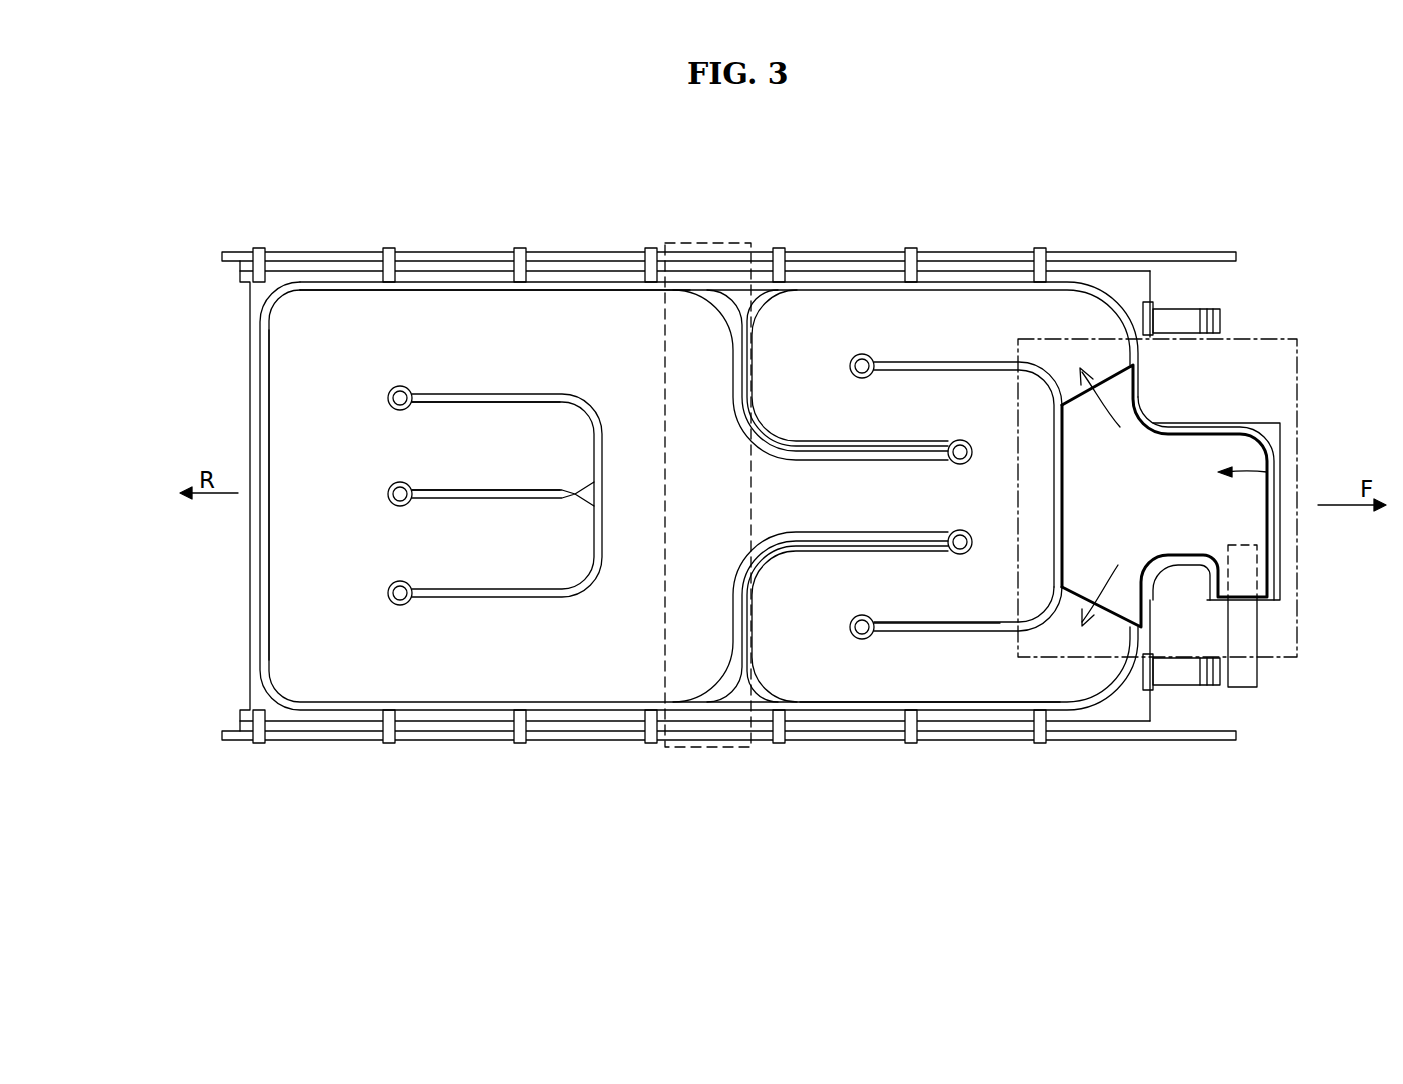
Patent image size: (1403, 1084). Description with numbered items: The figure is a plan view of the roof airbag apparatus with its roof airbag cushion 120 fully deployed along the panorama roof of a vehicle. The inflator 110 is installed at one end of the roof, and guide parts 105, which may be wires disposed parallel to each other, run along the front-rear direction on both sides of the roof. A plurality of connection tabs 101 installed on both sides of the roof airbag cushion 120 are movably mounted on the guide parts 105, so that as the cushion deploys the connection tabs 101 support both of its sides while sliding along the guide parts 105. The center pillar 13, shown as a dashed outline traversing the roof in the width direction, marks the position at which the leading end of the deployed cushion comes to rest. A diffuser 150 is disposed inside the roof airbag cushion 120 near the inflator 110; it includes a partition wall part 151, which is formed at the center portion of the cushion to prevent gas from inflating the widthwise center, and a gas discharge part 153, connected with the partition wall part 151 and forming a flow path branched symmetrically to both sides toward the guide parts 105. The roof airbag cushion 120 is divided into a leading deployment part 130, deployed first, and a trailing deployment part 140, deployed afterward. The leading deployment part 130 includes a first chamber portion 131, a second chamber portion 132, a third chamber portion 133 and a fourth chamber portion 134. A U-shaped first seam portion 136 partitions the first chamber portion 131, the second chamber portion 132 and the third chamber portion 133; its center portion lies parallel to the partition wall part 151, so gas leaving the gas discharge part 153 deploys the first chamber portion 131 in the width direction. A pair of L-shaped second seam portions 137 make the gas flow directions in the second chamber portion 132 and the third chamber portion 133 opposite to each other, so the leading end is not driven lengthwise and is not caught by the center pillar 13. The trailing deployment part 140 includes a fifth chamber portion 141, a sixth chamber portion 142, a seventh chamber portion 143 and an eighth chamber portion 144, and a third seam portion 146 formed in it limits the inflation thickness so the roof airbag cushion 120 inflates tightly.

The center pillar 13 is at (738, 243).
The connection tabs 101 is at (1041, 261).
The guide parts 105 is at (1198, 261).
The inflator 110 is at (1258, 672).
The roof airbag cushion 120 is at (695, 496).
The leading deployment part 130 is at (938, 495).
The first chamber portion 131 is at (1085, 637).
The second chamber portion 132 is at (958, 655).
The third chamber portion 133 is at (903, 588).
The fourth chamber portion 134 is at (846, 497).
The first seam portion 136 is at (1055, 385).
The second seam portions 137 is at (862, 446).
The trailing deployment part 140 is at (608, 489).
The fifth chamber portion 141 is at (678, 385).
The sixth chamber portion 142 is at (505, 330).
The seventh chamber portion 143 is at (340, 487).
The eighth chamber portion 144 is at (478, 435).
The third seam portion 146 is at (598, 535).
The diffuser 150 is at (1193, 498).
The partition wall part 151 is at (1063, 517).
The gas discharge part 153 is at (1127, 423).